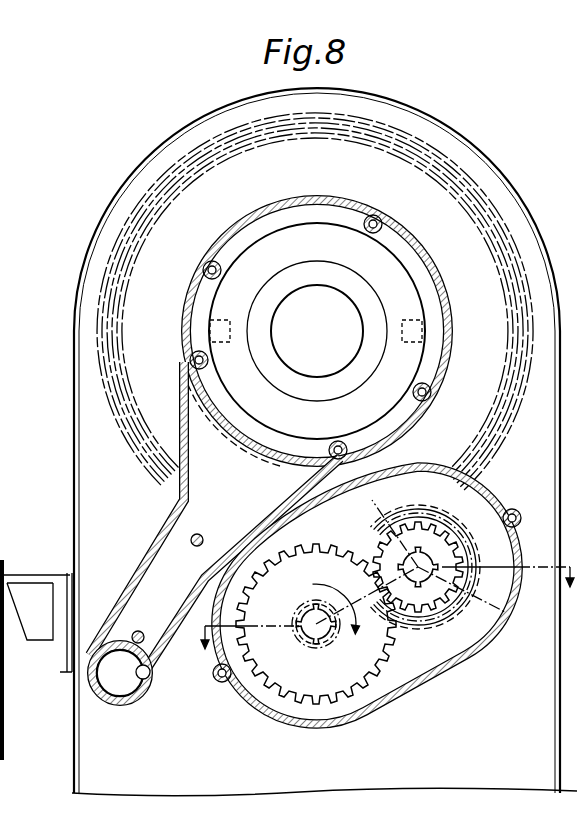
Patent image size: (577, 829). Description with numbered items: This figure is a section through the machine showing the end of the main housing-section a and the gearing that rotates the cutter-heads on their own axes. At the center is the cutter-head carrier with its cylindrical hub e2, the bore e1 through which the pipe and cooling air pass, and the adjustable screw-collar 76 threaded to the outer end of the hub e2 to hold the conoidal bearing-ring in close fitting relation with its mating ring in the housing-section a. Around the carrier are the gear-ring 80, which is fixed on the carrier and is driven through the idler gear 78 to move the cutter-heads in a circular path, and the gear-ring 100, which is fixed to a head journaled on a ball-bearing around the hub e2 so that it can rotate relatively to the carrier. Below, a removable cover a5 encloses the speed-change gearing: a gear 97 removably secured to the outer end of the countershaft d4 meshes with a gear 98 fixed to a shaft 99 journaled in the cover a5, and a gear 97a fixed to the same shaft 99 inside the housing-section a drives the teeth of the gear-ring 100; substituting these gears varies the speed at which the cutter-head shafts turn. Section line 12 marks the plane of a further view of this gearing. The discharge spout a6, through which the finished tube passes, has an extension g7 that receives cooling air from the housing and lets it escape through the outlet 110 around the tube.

The main housing-section a is at (515, 218).
The removable cover a5 is at (420, 695).
The discharge spout a6 is at (182, 440).
The bore of carrier e1 is at (317, 331).
The cylindrical hub e2 is at (332, 268).
The countershaft d4 is at (323, 633).
The extension of spout g7 is at (147, 686).
The section line 12— 12 is at (385, 596).
The adjustable screw-collar 76 is at (407, 296).
The idler gear 78 is at (470, 590).
The gear-ring 80 is at (508, 417).
The gear 97 is at (330, 683).
The gear 97a is at (423, 630).
The gear 98 is at (440, 583).
The shaft 99 is at (428, 557).
The gear-ring 100 is at (500, 393).
The outlet 110 is at (122, 688).